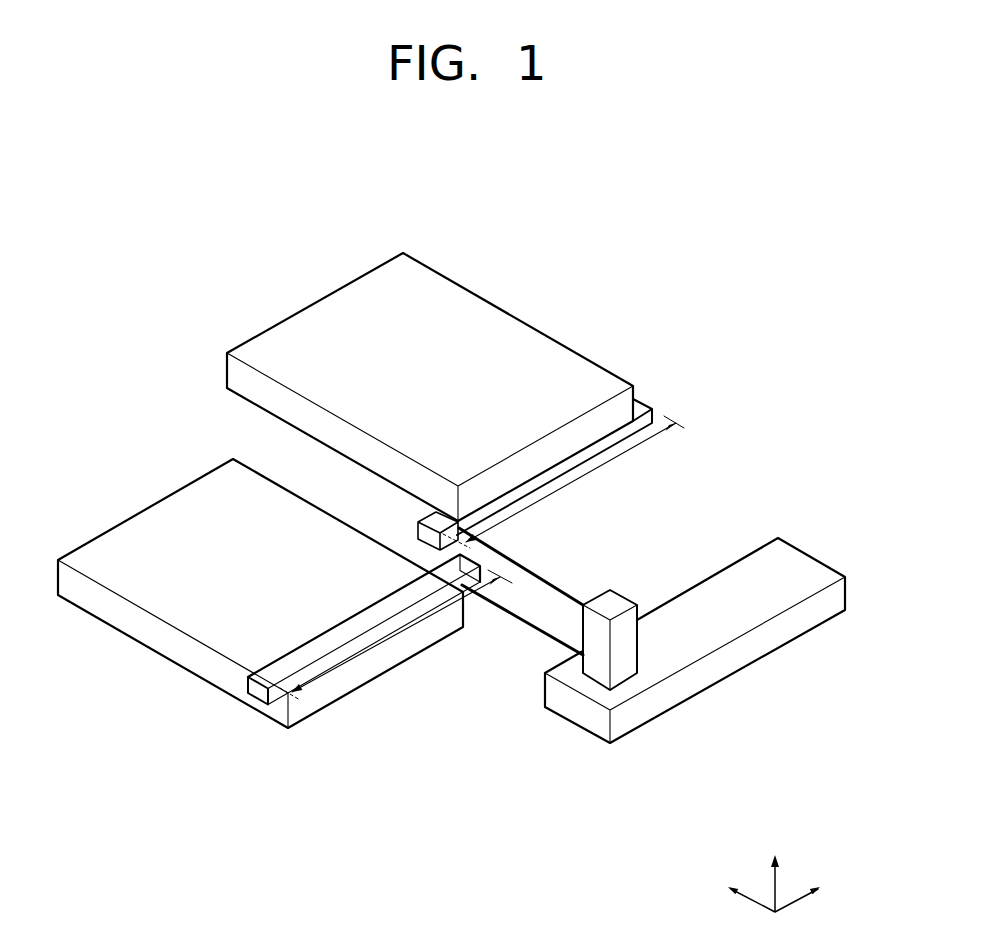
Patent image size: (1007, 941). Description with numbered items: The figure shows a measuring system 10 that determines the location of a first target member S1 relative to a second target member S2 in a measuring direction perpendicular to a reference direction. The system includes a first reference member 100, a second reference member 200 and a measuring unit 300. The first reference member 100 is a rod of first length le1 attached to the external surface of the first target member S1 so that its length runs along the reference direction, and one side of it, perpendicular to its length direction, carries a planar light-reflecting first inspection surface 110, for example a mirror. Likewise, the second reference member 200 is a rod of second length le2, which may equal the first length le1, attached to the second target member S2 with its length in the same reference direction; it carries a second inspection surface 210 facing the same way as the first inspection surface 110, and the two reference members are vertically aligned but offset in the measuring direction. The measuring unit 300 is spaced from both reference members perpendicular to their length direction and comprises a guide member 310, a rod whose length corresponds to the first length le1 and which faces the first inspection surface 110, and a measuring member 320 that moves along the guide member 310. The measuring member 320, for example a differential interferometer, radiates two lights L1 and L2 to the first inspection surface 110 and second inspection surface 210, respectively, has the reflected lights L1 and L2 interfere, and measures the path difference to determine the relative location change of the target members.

The measuring system 10 is at (795, 190).
The first target member S1 is at (510, 332).
The second target member S2 is at (147, 525).
The first reference member 100 is at (650, 388).
The first inspection surface 110 is at (652, 422).
The second reference member 200 is at (246, 702).
The second inspection surface 210 is at (323, 665).
The measuring unit 300 is at (695, 652).
The guide member 310 is at (725, 665).
The measuring member 320 is at (618, 670).
The light L1 is at (558, 578).
The light L2 is at (535, 633).
The first length le1 is at (583, 474).
The second length le2 is at (383, 648).